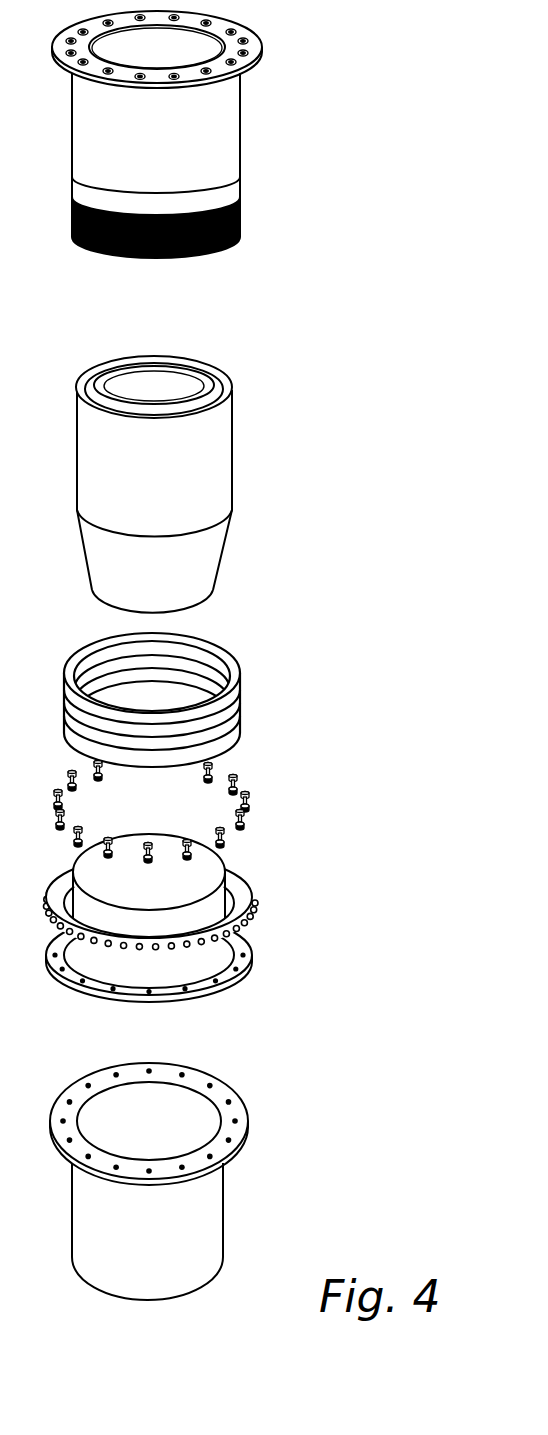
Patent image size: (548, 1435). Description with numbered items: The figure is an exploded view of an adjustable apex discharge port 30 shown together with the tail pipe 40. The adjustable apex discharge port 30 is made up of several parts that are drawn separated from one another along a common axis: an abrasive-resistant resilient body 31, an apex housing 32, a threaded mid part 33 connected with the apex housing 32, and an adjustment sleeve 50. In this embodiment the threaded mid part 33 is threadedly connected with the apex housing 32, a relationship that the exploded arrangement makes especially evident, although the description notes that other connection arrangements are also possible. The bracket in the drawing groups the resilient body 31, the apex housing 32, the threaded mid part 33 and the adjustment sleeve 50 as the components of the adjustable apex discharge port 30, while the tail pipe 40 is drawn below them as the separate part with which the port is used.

The adjustable apex discharge port 30 is at (337, 12).
The abrasive-resistant resilient body 31 is at (205, 484).
The apex housing 32 is at (207, 141).
The threaded mid part 33 is at (240, 719).
The tail pipe 40 is at (193, 1213).
The adjustment sleeve 50 is at (253, 897).